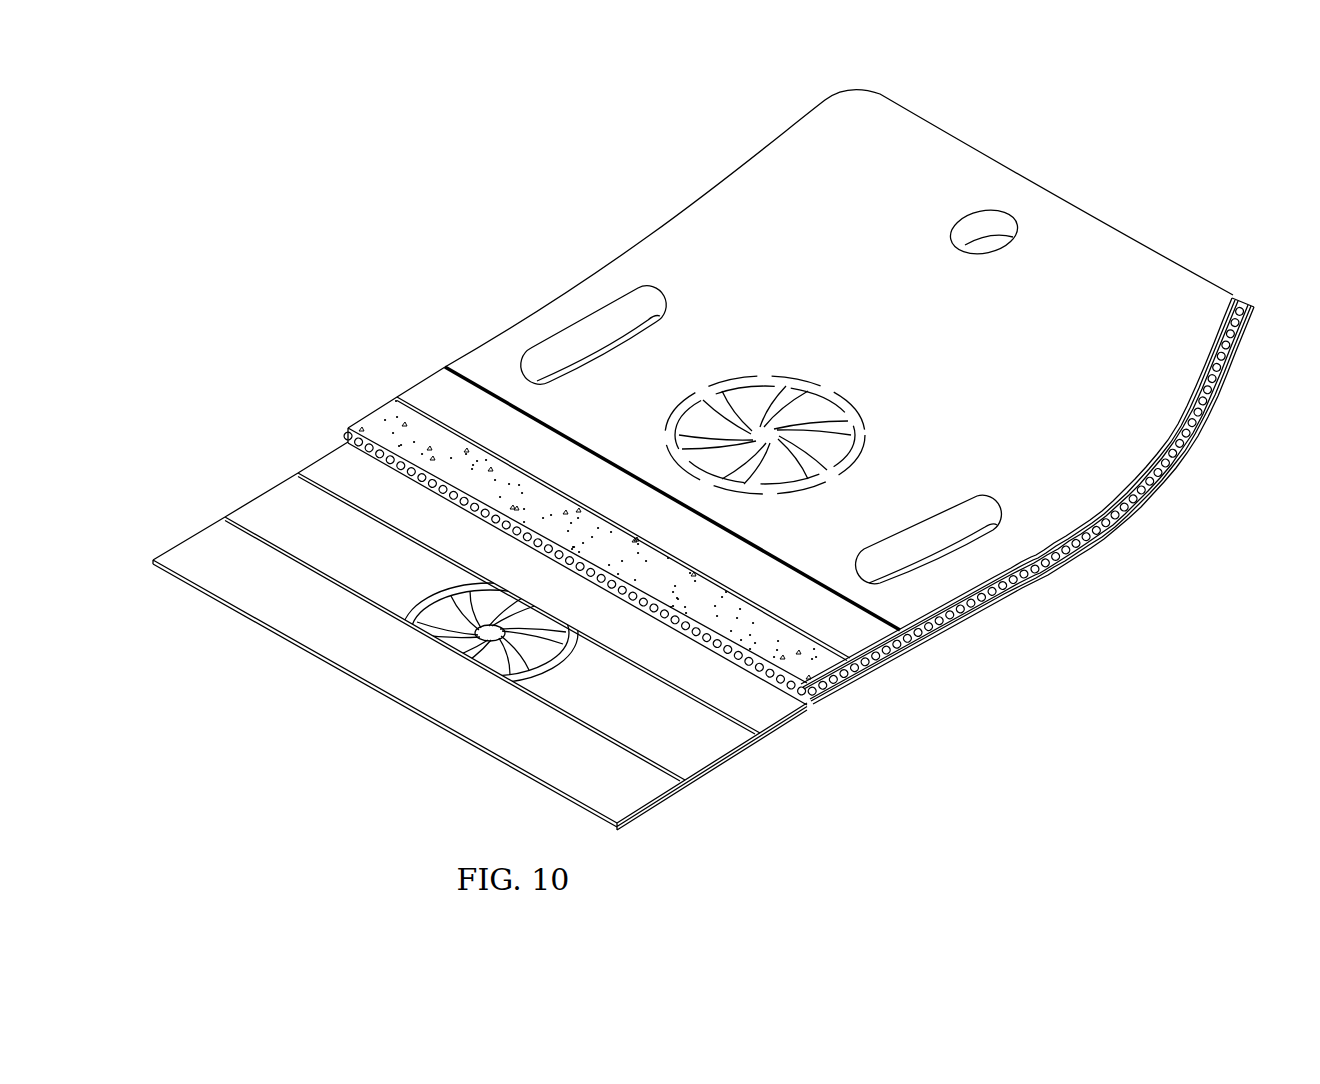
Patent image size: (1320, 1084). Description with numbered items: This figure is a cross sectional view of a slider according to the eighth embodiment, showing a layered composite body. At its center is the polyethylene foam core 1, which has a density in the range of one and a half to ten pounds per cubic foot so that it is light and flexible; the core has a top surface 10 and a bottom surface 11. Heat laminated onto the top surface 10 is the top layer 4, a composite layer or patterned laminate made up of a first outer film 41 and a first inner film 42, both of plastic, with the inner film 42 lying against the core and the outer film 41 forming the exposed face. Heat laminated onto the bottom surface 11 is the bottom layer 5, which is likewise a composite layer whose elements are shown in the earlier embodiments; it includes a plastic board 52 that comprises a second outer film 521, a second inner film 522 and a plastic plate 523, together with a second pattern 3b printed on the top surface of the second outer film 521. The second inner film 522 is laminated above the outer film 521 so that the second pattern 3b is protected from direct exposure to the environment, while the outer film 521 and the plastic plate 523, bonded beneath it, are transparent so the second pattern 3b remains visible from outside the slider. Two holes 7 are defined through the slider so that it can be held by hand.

The polyethylene foam core 1 is at (852, 691).
The top layer 4 is at (790, 424).
The first outer film 41 is at (952, 604).
The first inner film 42 is at (889, 639).
The holes 7 is at (573, 350).
The top surface 10 is at (558, 514).
The bottom surface 11 is at (432, 503).
The bottom layer 5 is at (597, 667).
The plastic board 52 is at (504, 667).
The second outer film 521 is at (713, 764).
The second inner film 522 is at (527, 628).
The plastic plate 523 is at (480, 696).
The second pattern 3b is at (407, 605).